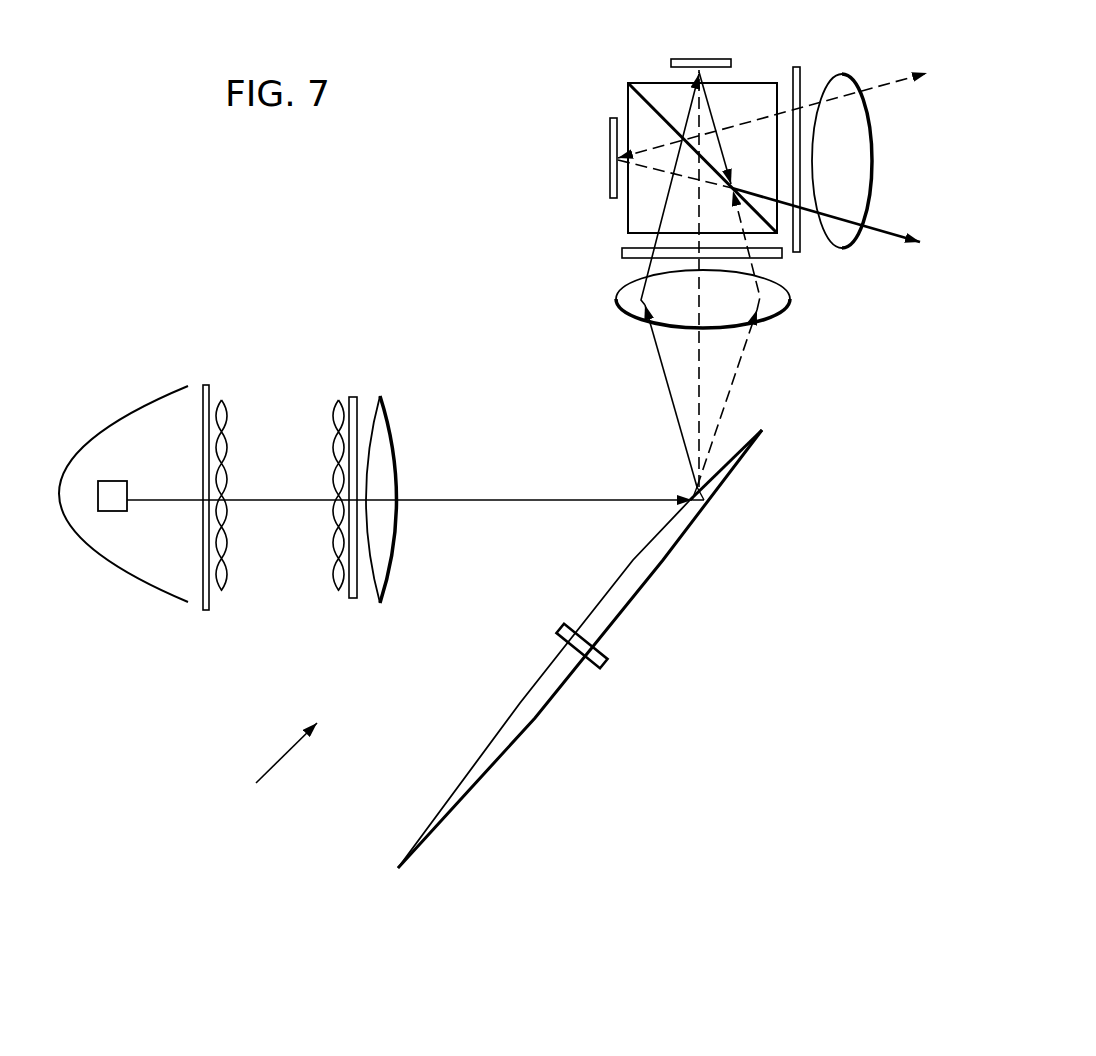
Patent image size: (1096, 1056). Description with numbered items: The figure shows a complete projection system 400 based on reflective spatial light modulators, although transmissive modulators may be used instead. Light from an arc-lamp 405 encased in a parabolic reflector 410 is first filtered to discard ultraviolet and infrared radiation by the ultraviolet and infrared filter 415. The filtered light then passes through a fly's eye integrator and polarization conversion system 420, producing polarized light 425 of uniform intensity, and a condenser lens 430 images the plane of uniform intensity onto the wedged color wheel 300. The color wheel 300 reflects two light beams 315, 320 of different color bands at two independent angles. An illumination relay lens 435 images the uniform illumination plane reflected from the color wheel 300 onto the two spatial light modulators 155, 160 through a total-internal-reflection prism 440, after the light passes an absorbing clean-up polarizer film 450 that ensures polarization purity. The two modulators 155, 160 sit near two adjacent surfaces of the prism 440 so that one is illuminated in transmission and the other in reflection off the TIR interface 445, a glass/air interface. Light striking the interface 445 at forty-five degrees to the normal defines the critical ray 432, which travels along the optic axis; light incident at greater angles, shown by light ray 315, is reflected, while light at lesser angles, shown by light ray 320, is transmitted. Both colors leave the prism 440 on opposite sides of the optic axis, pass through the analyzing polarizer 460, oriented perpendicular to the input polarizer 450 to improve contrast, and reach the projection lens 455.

The spatial light modulator 155 is at (610, 133).
The spatial light modulator 160 is at (693, 57).
The color wheel 300 is at (540, 703).
The light ray 315 is at (728, 395).
The light ray 320 is at (668, 390).
The projection system 400 is at (272, 769).
The arc-lamp 405 is at (118, 480).
The parabolic reflector 410 is at (150, 396).
The ultraviolet and infrared filter 415 is at (205, 612).
The fly's eye integrator and polarization conversion system 420 is at (328, 350).
The polarized light 425 is at (518, 498).
The condenser lens 430 is at (388, 403).
The critical ray 432 is at (700, 363).
The illumination relay lens 435 is at (627, 295).
The total-internal-reflection prism 440 is at (628, 213).
The TIR interface 445 is at (628, 98).
The clean-up polarizer film 450 is at (622, 252).
The projection lens 455 is at (848, 80).
The analyzing polarizer 460 is at (797, 63).